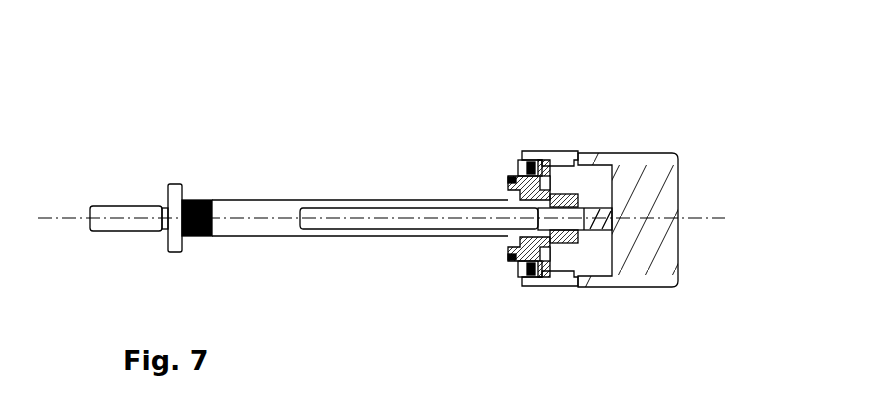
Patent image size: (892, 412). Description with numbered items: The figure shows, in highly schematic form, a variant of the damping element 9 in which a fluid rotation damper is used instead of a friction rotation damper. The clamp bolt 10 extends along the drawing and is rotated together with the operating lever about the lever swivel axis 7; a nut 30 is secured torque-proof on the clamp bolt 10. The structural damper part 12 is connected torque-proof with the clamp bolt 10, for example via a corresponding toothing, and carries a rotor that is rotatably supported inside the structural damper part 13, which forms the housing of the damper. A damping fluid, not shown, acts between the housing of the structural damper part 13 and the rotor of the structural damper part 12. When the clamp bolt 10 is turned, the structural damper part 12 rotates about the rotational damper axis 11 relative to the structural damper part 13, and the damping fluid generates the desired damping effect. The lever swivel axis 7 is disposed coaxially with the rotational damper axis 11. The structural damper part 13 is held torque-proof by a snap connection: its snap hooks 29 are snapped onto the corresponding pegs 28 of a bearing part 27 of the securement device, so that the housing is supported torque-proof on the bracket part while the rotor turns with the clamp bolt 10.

The lever swivel axis 7 is at (65, 217).
The damping element 9 is at (630, 300).
The clamp bolt 10 is at (257, 210).
The rotational damper axis 11 is at (692, 221).
The structural damper part 12 is at (612, 212).
The structural damper part 13 is at (643, 170).
The bearing part 27 is at (507, 259).
The pegs 28 is at (532, 162).
The snap hooks 29 is at (535, 162).
The nut 30 is at (508, 187).